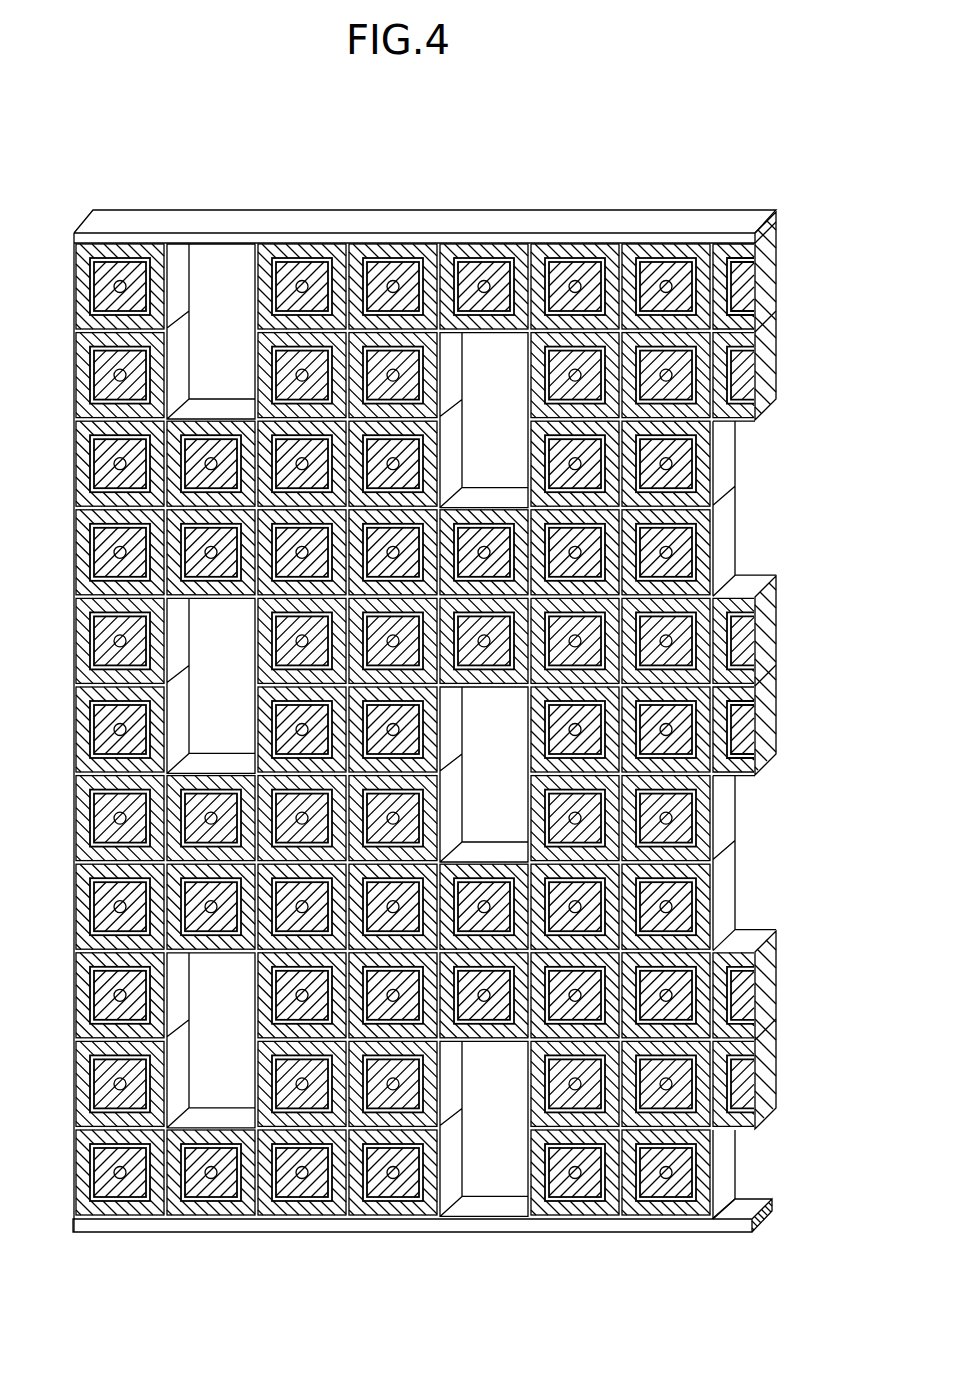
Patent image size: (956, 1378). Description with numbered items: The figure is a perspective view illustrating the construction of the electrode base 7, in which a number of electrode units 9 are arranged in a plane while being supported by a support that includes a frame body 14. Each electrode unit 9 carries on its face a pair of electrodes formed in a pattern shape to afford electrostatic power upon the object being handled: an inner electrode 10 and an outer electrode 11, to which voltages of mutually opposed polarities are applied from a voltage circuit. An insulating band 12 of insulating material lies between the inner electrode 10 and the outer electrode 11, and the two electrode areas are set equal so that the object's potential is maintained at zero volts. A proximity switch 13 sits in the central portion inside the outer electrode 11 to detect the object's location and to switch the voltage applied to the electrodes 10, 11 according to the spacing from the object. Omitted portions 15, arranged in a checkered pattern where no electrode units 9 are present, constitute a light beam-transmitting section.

The electrode base 7 is at (695, 195).
The electrode unit 9 is at (568, 252).
The inner electrode 10 is at (285, 250).
The outer electrode 11 is at (303, 265).
The insulating band 12 is at (326, 258).
The proximity switch 13 is at (307, 284).
The frame body 14 is at (608, 218).
The omitted portion 15 is at (202, 334).